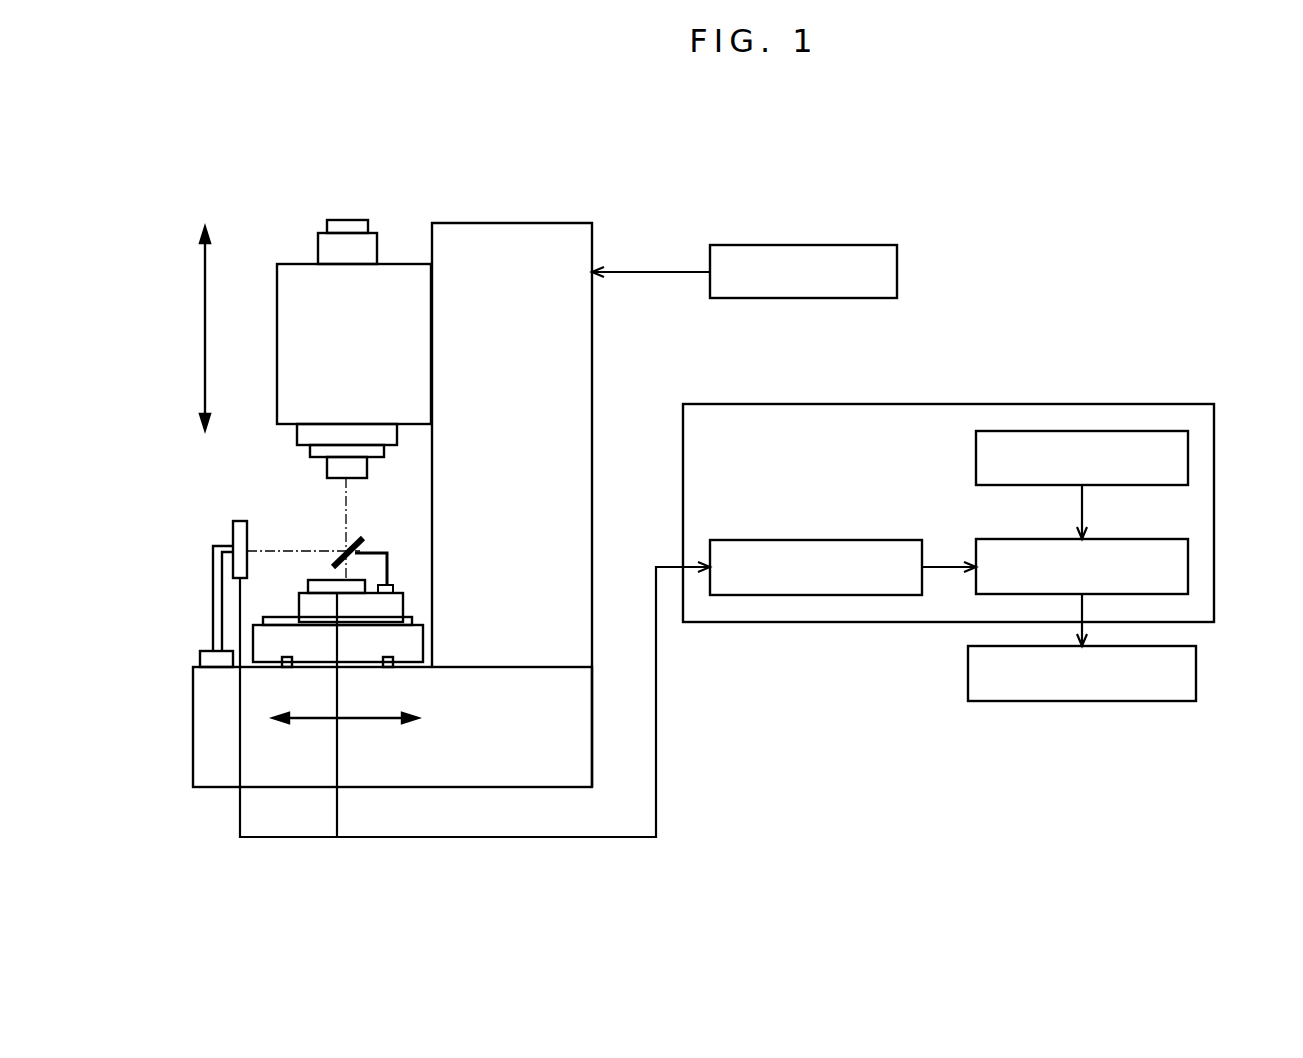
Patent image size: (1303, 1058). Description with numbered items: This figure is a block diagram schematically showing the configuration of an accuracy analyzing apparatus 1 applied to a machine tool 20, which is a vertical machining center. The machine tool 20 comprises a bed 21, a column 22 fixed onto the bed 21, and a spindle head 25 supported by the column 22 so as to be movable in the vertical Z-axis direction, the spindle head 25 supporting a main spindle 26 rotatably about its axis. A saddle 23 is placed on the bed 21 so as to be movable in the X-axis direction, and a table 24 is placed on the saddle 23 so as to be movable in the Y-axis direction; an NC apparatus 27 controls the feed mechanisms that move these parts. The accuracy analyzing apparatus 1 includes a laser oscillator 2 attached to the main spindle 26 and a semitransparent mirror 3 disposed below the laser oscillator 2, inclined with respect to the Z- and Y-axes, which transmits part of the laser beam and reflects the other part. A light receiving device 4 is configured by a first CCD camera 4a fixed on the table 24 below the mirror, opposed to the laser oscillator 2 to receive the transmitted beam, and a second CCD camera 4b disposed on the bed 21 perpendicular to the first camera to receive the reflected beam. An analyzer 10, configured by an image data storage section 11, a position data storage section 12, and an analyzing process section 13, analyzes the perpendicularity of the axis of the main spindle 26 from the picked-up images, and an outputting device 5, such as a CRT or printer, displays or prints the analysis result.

The accuracy analyzing apparatus 1 is at (885, 678).
The laser oscillator 2 is at (333, 470).
The semitransparent mirror 3 is at (363, 541).
The light receiving device 4 is at (401, 678).
The first CCD camera 4a is at (318, 582).
The second CCD camera 4b is at (237, 535).
The outputting device 5 is at (1080, 702).
The analyzer 10 is at (1057, 404).
The image data storage section 11 is at (812, 540).
The position data storage section 12 is at (1188, 458).
The analyzing process section 13 is at (1188, 565).
The machine tool 20 is at (410, 455).
The bed 21 is at (202, 737).
The column 22 is at (582, 358).
The saddle 23 is at (413, 641).
The table 24 is at (397, 606).
The spindle head 25 is at (297, 270).
The main spindle 26 is at (390, 435).
The NC apparatus 27 is at (771, 245).